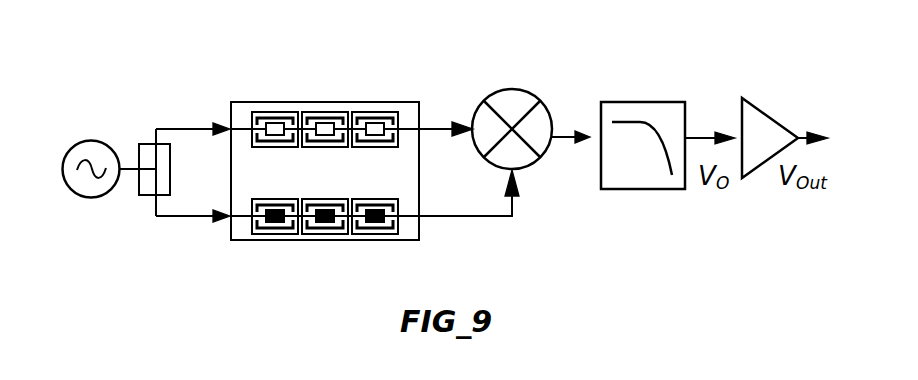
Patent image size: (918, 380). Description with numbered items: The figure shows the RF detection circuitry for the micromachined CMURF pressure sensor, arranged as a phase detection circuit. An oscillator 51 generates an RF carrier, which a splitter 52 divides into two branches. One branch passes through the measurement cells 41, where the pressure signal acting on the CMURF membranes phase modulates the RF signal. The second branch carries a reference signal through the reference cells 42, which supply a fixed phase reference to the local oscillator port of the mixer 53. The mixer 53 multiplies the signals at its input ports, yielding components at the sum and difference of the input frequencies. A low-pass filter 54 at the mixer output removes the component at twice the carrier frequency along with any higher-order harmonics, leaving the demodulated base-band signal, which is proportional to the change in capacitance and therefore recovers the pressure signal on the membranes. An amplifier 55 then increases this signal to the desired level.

The measurement cells 41 is at (273, 122).
The reference cells 42 is at (277, 218).
The oscillator 51 is at (86, 142).
The splitter 52 is at (147, 150).
The mixer 53 is at (510, 102).
The low-pass filter 54 is at (627, 110).
The amplifier 55 is at (757, 125).